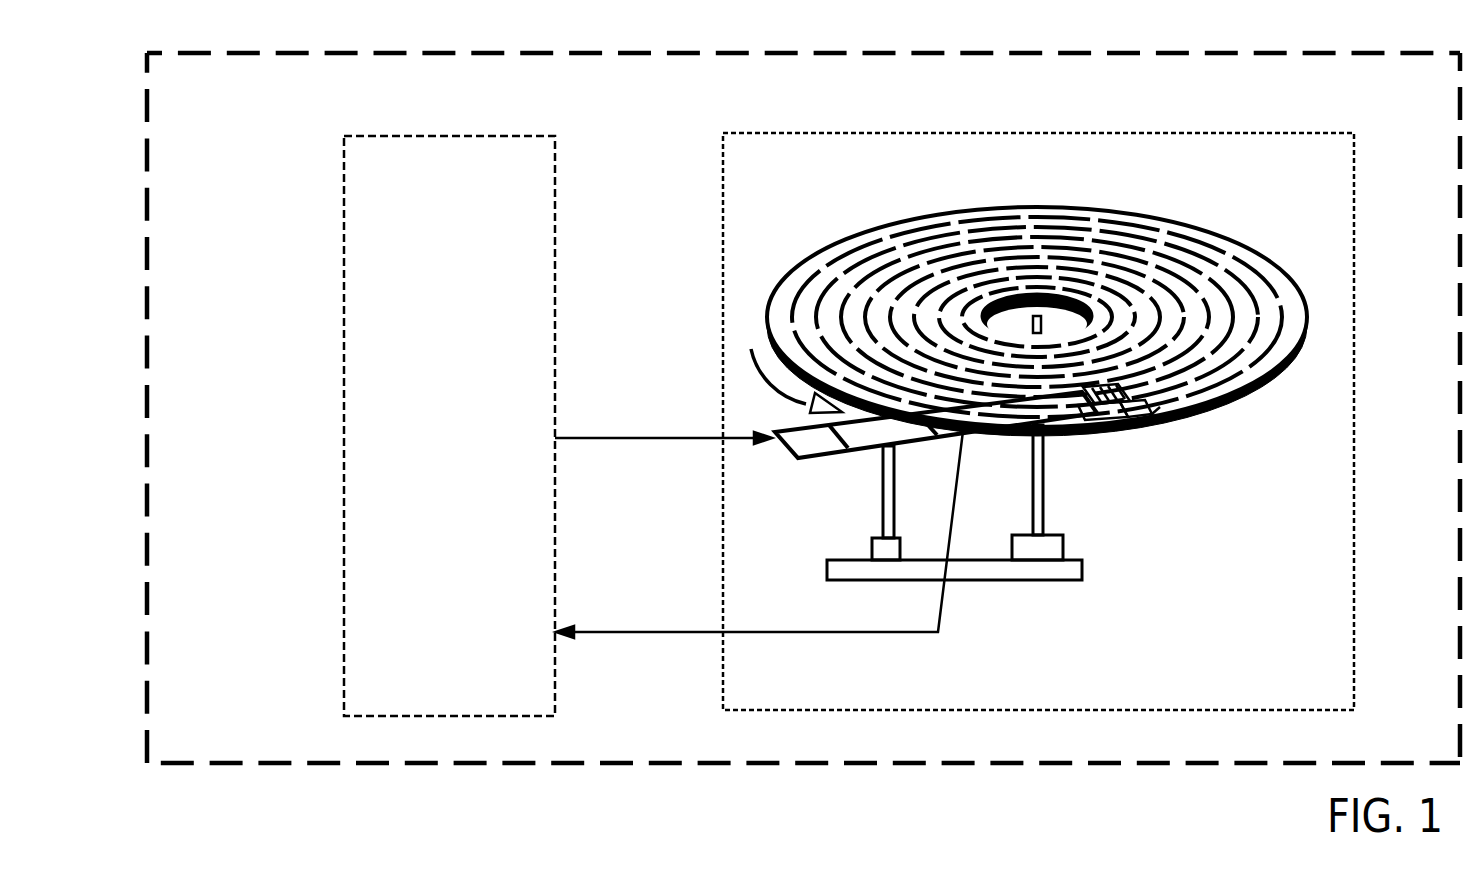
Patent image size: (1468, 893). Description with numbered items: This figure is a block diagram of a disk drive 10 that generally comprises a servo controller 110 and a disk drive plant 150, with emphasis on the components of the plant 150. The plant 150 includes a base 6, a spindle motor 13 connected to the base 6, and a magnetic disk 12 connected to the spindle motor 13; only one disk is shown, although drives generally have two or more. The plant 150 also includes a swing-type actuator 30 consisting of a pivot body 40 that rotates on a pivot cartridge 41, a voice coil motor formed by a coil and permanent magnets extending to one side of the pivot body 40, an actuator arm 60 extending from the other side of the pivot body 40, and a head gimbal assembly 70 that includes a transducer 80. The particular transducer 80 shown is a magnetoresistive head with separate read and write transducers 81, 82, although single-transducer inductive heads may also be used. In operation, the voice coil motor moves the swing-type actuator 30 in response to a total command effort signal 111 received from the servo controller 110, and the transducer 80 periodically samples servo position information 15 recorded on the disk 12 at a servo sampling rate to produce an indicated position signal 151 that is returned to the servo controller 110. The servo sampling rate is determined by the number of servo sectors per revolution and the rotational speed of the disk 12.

The disk drive 10 is at (1100, 51).
The servo controller 110 is at (534, 133).
The disk drive plant 150 is at (887, 133).
The magnetic disk 12 is at (1200, 223).
The servo position information 15 is at (1250, 256).
The spindle motor 13 is at (1042, 544).
The base 6 is at (972, 580).
The swing-type actuator 30 is at (924, 437).
The actuator arm 60 is at (962, 442).
The pivot body 40 is at (927, 430).
The pivot cartridge 41 is at (892, 552).
The head gimbal assembly 70 is at (1085, 418).
The transducer 80 is at (1127, 380).
The read transducer 81 is at (1158, 420).
The write transducer 82 is at (1123, 418).
The total command effort signal 111 is at (590, 438).
The indicated position signal 151 is at (610, 633).